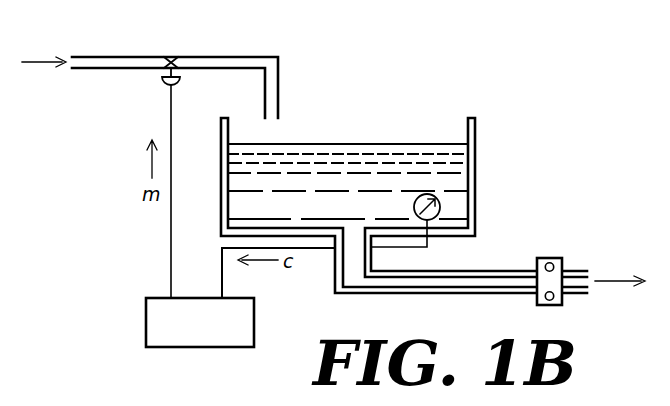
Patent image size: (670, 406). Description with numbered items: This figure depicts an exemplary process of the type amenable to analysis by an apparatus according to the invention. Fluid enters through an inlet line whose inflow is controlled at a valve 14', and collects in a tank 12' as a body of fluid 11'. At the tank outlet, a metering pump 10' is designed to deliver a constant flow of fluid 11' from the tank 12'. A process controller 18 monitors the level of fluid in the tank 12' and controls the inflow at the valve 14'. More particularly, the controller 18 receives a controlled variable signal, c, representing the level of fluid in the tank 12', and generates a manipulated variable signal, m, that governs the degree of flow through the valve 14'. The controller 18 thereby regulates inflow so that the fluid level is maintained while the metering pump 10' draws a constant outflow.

The valve 14' is at (143, 50).
The tank 12' is at (404, 198).
The fluid 11' is at (348, 181).
The metering pump 10' is at (575, 261).
The process controller 18 is at (209, 334).